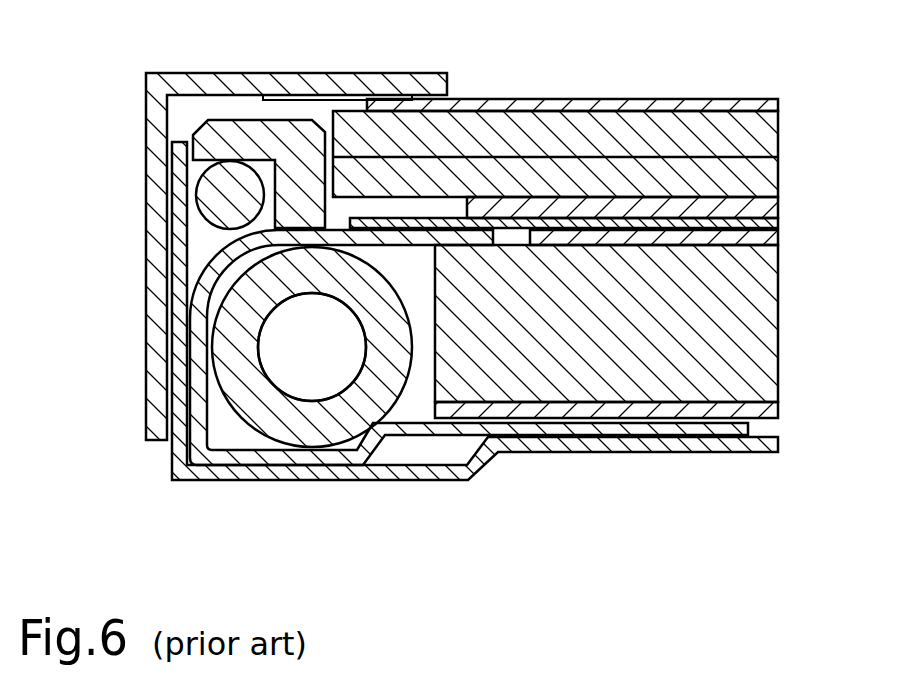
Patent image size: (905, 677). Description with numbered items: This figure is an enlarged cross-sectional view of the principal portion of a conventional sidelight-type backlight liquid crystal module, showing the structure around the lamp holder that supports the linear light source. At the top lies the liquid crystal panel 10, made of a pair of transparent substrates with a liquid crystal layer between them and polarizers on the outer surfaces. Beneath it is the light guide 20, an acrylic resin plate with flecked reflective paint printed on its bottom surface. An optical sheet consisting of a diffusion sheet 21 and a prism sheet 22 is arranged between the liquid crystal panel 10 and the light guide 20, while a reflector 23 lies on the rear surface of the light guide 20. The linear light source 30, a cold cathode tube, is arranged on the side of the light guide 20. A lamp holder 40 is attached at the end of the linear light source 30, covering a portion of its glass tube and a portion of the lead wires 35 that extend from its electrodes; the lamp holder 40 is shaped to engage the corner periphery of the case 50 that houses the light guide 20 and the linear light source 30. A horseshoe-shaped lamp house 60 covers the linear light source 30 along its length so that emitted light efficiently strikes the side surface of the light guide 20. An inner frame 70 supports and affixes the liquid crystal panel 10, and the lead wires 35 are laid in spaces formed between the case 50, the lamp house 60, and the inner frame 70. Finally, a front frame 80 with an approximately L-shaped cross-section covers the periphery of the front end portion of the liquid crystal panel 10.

The liquid crystal panel 10 is at (620, 97).
The light guide 20 is at (770, 320).
The diffusion sheet 21 is at (773, 240).
The prism sheet 22 is at (772, 225).
The reflector 23 is at (768, 413).
The linear light source 30 is at (302, 380).
The lead wires 35 is at (203, 185).
The lamp holder 40 is at (240, 388).
The case 50 is at (442, 482).
The lamp house 60 is at (348, 458).
The inner frame 70 is at (200, 132).
The front frame 80 is at (245, 73).